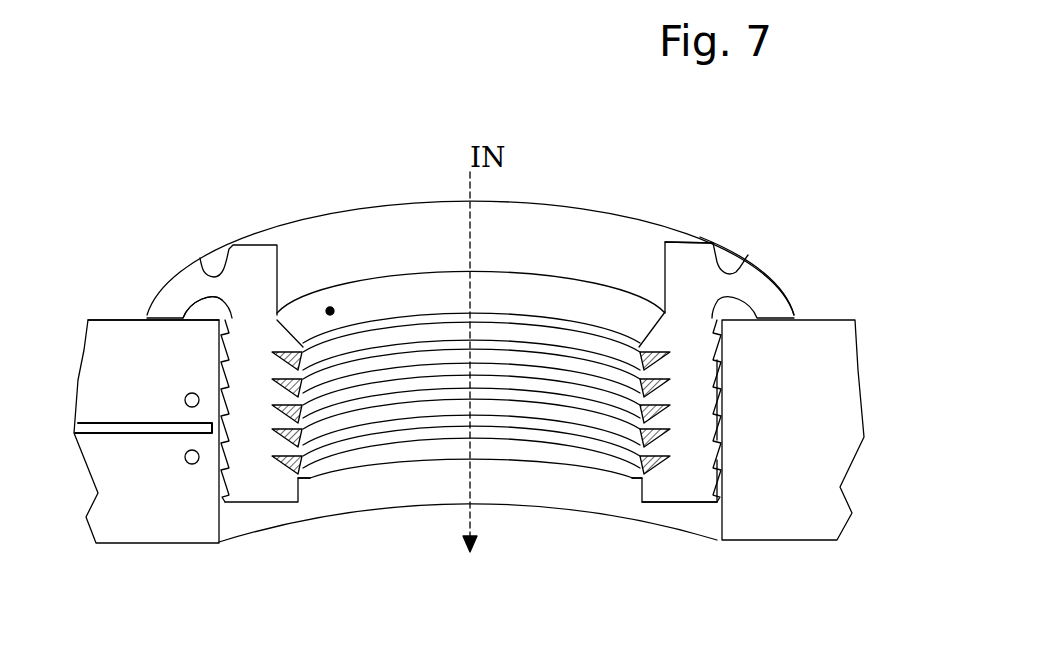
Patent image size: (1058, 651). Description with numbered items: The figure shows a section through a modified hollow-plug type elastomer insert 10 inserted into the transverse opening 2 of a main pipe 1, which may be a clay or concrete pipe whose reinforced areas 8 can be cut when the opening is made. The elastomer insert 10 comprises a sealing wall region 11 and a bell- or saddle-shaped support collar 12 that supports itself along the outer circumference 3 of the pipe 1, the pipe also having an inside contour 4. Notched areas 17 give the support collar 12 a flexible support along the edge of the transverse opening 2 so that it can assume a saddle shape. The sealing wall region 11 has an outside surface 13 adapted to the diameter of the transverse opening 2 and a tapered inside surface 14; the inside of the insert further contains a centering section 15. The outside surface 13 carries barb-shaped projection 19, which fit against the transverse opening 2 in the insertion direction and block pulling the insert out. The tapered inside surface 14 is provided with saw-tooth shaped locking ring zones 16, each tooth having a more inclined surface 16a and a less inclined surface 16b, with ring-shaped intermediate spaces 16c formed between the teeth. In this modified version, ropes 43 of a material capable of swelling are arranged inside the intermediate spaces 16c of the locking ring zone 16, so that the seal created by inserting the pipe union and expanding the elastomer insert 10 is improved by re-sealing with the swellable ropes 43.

The main pipe 1 is at (152, 544).
The transverse opening 2 is at (220, 513).
The outer circumference 3 is at (128, 320).
The inside contour 4 is at (812, 543).
The reinforced areas 8 is at (186, 461).
The elastomer insert 10 is at (487, 324).
The sealing wall region 11 is at (687, 472).
The support collar 12 is at (750, 283).
The outside surface 13 is at (723, 393).
The tapered inside surface 14 is at (630, 480).
The centering section 15 is at (660, 265).
The locking ring zones 16 is at (601, 429).
The more inclined surface 16a is at (330, 307).
The less inclined surface 16b is at (302, 466).
The ring-shaped intermediate spaces 16c is at (294, 385).
The notched areas 17 is at (212, 312).
The barb-shaped projection 19 is at (722, 348).
The ropes 43 is at (664, 380).